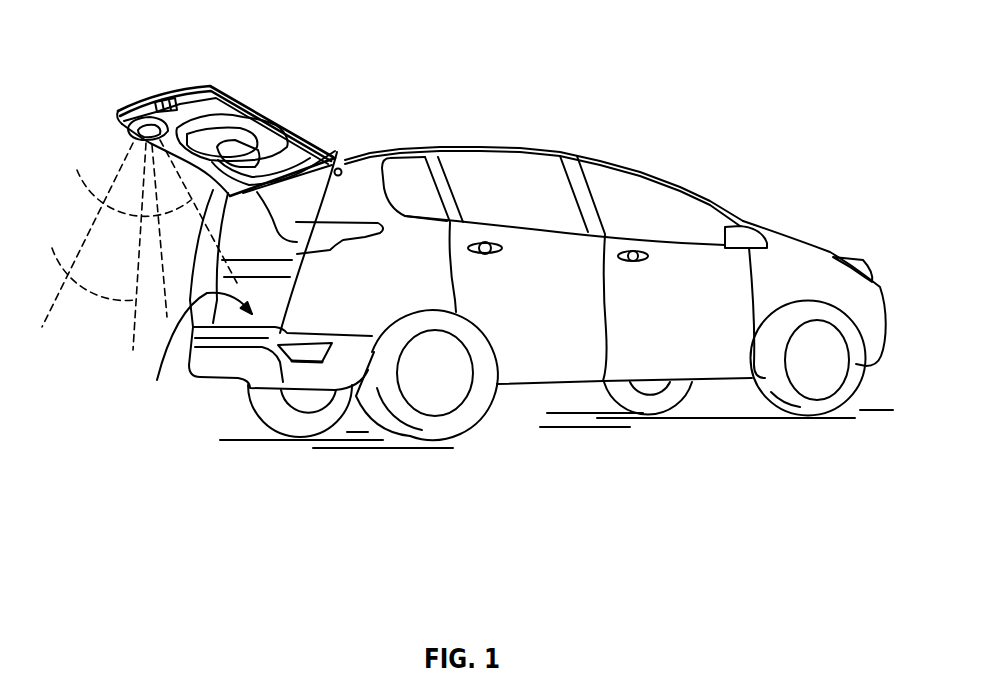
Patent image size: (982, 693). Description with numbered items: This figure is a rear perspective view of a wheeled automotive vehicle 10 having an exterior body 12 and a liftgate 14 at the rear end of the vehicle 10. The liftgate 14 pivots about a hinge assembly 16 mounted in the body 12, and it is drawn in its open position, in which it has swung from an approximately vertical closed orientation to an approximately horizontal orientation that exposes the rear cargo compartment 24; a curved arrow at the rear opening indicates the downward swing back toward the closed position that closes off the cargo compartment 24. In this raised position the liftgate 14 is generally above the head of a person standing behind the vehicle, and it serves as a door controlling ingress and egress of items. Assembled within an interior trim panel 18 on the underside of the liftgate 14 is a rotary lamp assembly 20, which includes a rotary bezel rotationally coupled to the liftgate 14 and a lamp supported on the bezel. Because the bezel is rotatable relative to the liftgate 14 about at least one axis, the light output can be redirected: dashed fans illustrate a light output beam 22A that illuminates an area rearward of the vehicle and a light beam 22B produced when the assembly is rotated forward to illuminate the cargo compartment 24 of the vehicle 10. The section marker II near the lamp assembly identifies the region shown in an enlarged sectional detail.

The wheeled automotive vehicle 10 is at (570, 97).
The exterior body 12 is at (367, 200).
The liftgate 14 is at (167, 92).
The hinge assembly 16 is at (345, 167).
The interior trim panel 18 is at (192, 138).
The rotary lamp assembly 20 is at (122, 137).
The light output beam 22A is at (92, 226).
The light beam 22B is at (116, 246).
The rear cargo compartment 24 is at (195, 271).
The section II detail II is at (140, 108).